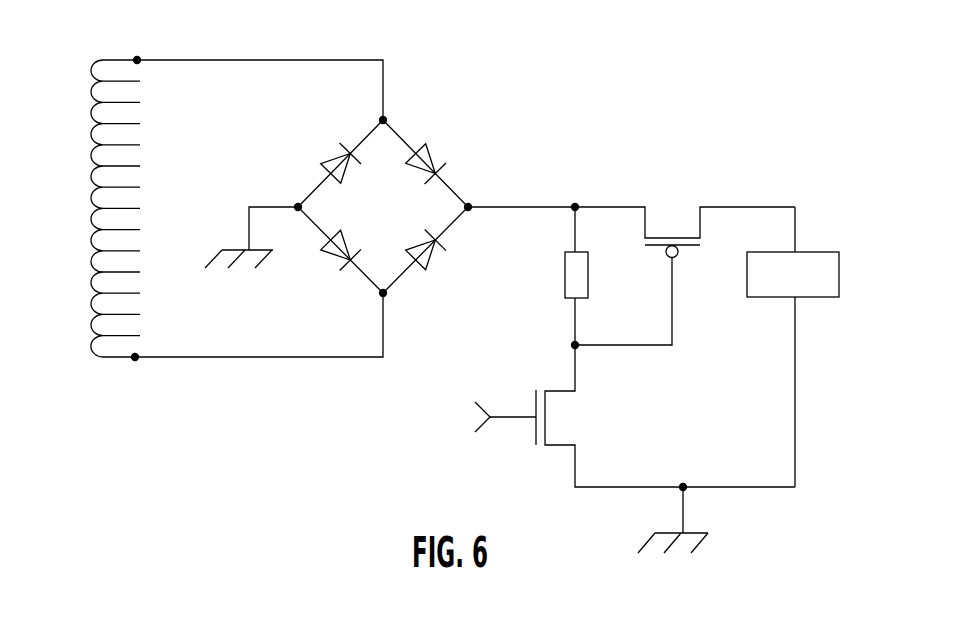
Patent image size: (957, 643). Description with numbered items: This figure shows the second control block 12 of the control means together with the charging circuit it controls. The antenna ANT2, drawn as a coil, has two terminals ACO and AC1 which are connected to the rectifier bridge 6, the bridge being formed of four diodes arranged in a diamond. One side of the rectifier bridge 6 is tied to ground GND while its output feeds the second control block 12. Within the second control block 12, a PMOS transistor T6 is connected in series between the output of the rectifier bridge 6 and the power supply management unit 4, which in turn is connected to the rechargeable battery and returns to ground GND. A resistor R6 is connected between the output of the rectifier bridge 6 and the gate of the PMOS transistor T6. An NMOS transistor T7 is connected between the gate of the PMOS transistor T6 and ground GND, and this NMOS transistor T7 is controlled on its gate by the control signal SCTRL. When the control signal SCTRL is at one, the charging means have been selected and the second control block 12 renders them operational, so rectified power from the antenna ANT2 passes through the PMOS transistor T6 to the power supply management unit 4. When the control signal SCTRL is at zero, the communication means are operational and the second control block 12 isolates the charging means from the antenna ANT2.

The rectifier bridge 6 is at (425, 127).
The second control block 12 is at (685, 230).
The power supply management unit 4 is at (802, 287).
The PMOS transistor T6 is at (698, 265).
The NMOS transistor T7 is at (568, 417).
The resistor R6 is at (565, 271).
The antenna ANT2 is at (93, 249).
The antenna terminal ACO is at (137, 58).
The antenna terminal AC1 is at (135, 360).
The ground GND is at (456, 395).
The control signal SCTRL is at (456, 416).